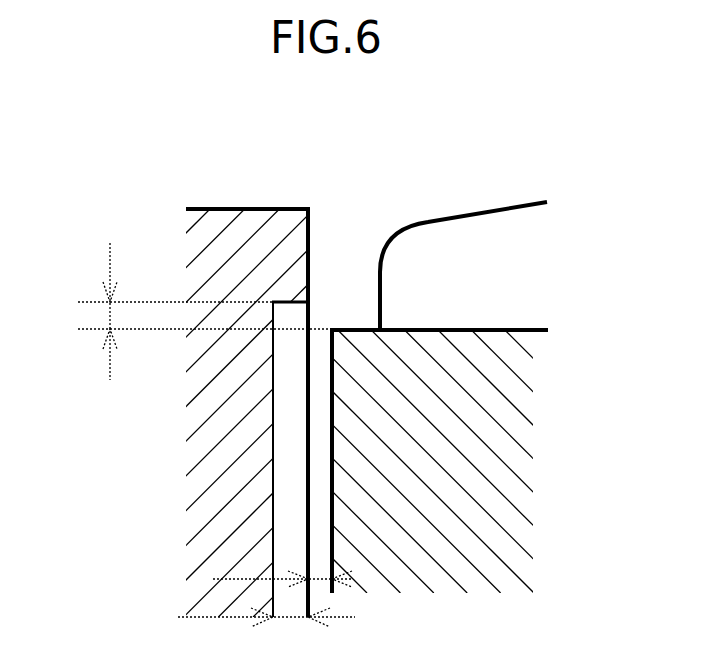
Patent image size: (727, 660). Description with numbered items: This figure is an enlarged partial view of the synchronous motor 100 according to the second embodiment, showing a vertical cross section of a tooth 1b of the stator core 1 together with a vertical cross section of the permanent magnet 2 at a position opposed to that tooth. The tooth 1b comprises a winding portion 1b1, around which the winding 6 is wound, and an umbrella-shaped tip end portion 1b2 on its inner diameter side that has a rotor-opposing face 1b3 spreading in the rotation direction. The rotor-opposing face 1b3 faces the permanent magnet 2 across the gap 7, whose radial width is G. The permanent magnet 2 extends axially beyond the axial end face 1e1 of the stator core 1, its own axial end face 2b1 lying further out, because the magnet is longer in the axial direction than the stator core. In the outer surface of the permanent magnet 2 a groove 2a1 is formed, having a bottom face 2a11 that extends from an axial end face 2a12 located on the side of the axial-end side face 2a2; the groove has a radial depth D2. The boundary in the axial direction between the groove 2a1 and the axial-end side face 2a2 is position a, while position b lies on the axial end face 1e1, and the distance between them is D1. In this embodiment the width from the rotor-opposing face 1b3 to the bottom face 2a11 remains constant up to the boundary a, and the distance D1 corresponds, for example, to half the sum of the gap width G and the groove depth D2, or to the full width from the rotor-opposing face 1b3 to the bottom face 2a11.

The synchronous motor 100 is at (458, 126).
The stator core 1 is at (576, 300).
The tooth 1b is at (611, 433).
The winding portion 1b1 is at (455, 427).
The tip end portion 1b2 is at (375, 452).
The rotor-opposing face 1b3 is at (332, 493).
The axial end face 1e1 is at (535, 332).
The permanent magnet 2 is at (288, 188).
The groove 2a1 is at (293, 413).
The bottom face 2a11 is at (273, 481).
The axial end face 2a12 is at (282, 300).
The axial-end side face 2a2 is at (310, 241).
The axial end face 2b1 is at (217, 210).
The winding 6 is at (430, 225).
The gap 7 is at (320, 540).
The boundary position a is at (313, 302).
The position on axial end face b is at (496, 326).
The distance D1 is at (201, 311).
The depth of groove D2 is at (250, 620).
The width of gap G is at (270, 581).